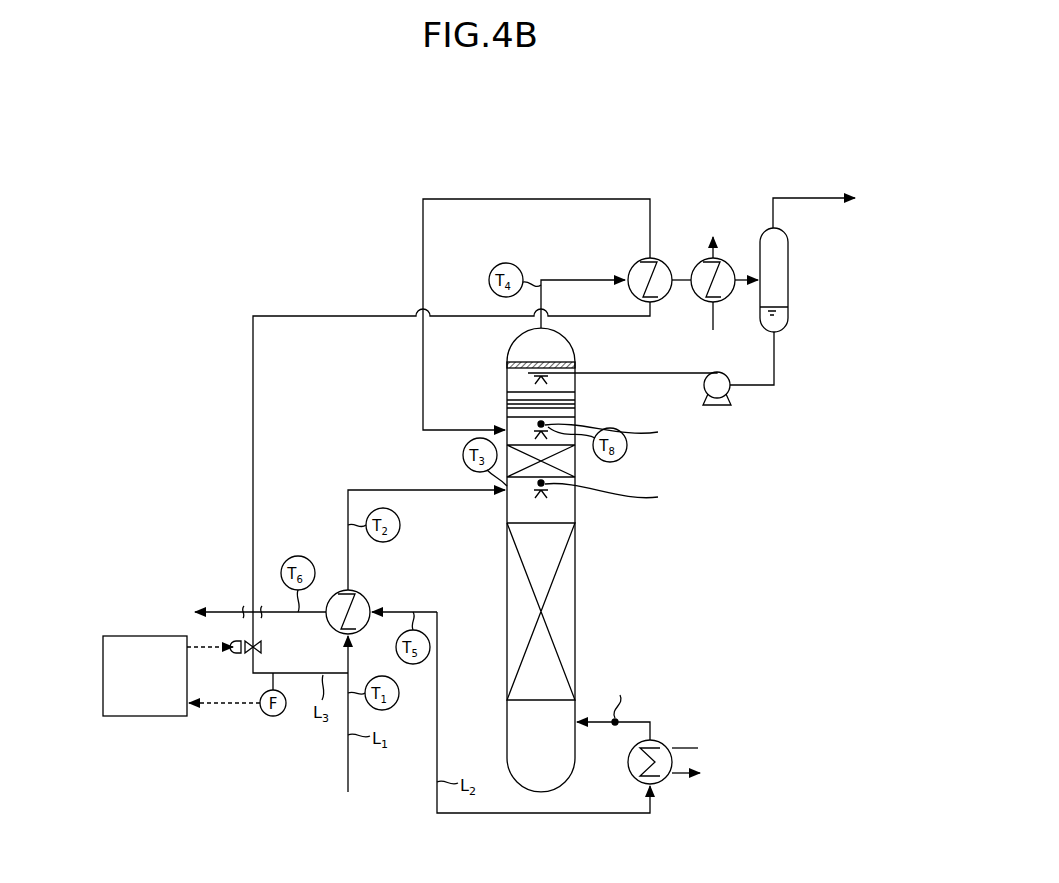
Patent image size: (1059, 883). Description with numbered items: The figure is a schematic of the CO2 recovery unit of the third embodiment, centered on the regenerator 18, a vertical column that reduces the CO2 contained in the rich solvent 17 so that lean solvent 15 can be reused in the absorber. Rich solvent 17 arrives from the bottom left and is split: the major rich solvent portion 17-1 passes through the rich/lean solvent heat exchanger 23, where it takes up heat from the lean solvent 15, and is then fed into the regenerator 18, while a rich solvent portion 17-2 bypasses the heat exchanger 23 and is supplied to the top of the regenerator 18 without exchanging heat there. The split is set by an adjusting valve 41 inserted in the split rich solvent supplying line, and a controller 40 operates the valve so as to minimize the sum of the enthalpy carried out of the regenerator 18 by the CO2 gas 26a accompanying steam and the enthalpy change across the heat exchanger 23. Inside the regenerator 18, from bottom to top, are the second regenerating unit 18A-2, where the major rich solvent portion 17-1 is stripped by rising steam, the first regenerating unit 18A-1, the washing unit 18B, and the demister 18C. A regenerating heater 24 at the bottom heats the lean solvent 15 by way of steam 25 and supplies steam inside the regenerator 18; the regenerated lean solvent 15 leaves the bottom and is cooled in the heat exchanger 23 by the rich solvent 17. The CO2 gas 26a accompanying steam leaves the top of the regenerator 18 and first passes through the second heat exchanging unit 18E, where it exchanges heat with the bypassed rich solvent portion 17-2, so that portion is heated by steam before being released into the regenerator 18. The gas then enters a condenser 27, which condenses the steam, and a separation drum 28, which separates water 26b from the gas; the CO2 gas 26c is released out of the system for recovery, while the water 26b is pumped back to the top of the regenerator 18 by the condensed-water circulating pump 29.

The lean solvent 15 is at (483, 847).
The rich solvent 17 is at (340, 759).
The major rich solvent portion 17-1 is at (481, 498).
The rich solvent portion 17-2 is at (481, 423).
The regenerator 18 is at (622, 558).
The first regenerating unit 18A-1 is at (577, 467).
The second regenerating unit 18A-2 is at (577, 625).
The washing unit 18B is at (577, 405).
The demister 18C is at (507, 362).
The second heat exchanging unit 18E is at (665, 262).
The rich/lean solvent heat exchanger 23 is at (368, 600).
The regenerating heater 24 is at (665, 746).
The steam 25 is at (698, 748).
The CO2 gas 26a is at (590, 273).
The water 26b is at (785, 320).
The CO2 gas 26c is at (838, 190).
The condenser 27 is at (728, 262).
The separation drum 28 is at (788, 275).
The condensed-water circulating pump 29 is at (726, 376).
The controller 40 is at (150, 636).
The adjusting valve 41 is at (233, 655).